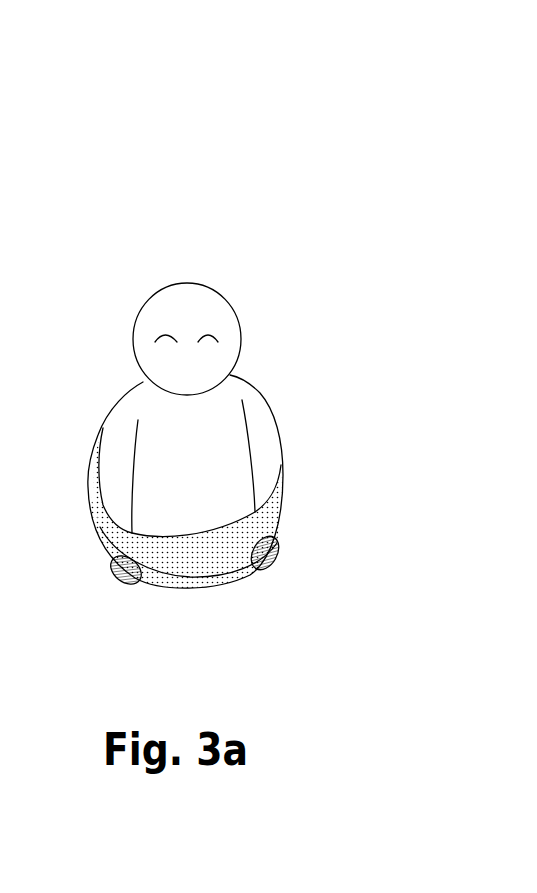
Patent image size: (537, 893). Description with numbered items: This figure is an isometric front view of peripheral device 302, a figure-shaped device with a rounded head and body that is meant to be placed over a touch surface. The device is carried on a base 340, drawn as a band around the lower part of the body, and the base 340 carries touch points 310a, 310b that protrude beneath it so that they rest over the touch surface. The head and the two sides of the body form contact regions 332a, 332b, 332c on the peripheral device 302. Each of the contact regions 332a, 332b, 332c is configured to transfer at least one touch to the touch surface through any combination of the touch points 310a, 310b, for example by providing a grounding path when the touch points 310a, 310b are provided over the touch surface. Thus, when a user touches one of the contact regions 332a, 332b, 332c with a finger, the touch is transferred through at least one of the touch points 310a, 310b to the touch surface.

The peripheral device 302 is at (414, 99).
The contact region 332a is at (118, 457).
The contact region 332b is at (175, 300).
The contact region 332c is at (268, 413).
The base 340 is at (208, 565).
The touch point 310a is at (125, 583).
The touch point 310b is at (273, 560).